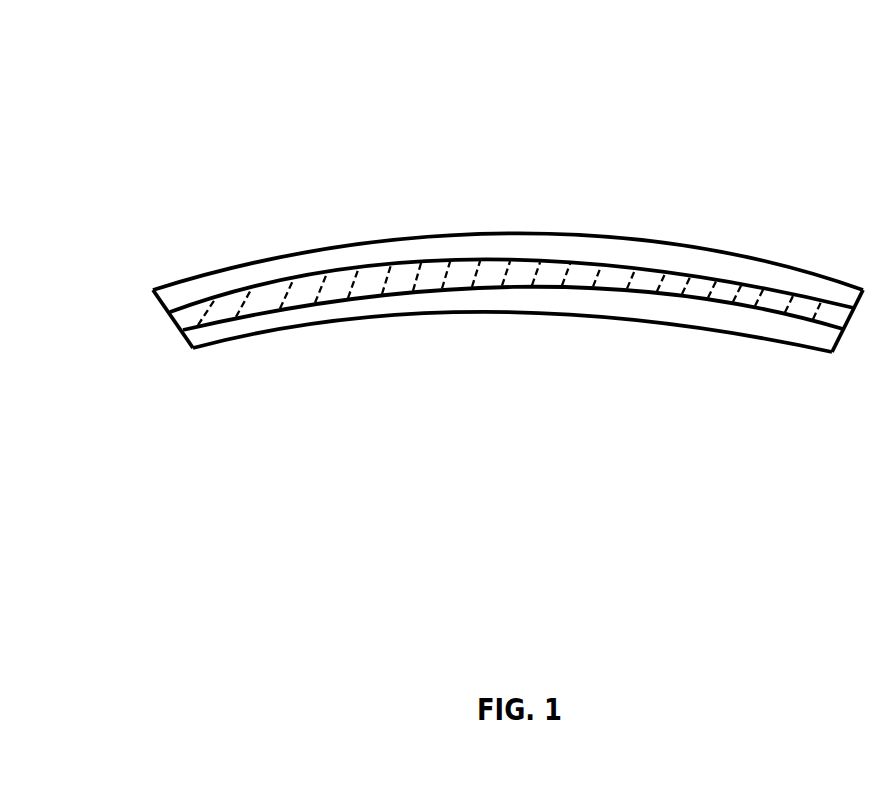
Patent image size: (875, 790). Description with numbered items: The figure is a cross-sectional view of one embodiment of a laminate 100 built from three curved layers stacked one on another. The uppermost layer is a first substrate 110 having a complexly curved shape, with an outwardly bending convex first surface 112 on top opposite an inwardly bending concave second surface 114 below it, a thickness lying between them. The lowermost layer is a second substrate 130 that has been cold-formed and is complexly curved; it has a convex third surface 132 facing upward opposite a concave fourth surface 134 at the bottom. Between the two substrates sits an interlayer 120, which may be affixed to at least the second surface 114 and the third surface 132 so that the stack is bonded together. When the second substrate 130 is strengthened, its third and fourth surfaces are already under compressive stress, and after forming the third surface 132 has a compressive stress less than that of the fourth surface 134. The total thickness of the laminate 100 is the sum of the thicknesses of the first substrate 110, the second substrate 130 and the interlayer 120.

The laminate 100 is at (185, 63).
The first substrate 110 is at (303, 260).
The first surface 112 is at (723, 234).
The second surface 114 is at (181, 281).
The interlayer 120 is at (430, 280).
The second substrate 130 is at (330, 308).
The third surface 132 is at (234, 326).
The fourth surface 134 is at (762, 350).